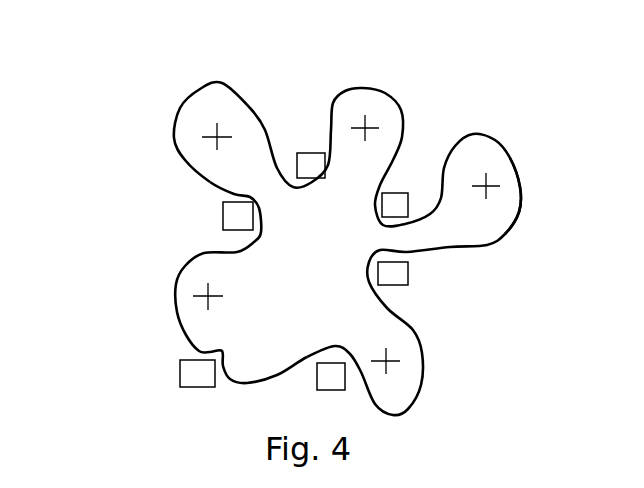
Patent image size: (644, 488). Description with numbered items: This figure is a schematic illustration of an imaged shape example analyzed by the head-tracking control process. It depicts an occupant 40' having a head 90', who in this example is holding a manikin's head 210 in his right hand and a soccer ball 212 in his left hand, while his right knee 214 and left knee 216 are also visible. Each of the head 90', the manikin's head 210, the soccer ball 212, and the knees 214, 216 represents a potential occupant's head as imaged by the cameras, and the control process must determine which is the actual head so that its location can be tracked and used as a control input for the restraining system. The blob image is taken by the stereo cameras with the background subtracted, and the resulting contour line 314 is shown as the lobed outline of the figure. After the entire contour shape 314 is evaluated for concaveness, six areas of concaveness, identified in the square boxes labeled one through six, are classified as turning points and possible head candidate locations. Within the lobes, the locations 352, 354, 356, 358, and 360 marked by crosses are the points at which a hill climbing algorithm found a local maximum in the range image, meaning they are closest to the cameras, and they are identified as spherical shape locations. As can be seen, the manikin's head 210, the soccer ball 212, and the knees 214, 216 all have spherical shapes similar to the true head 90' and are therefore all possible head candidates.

The occupant 40' is at (218, 271).
The manikin's head 210 is at (226, 80).
The head 90' is at (387, 147).
The soccer ball 212 is at (496, 130).
The right knee 214 is at (170, 281).
The left knee 216 is at (423, 323).
The contour line 314 is at (520, 213).
The local maxima location 352 is at (366, 115).
The local maxima location 354 is at (217, 137).
The local maxima location 356 is at (207, 297).
The local maxima location 358 is at (387, 362).
The local maxima location 360 is at (487, 187).